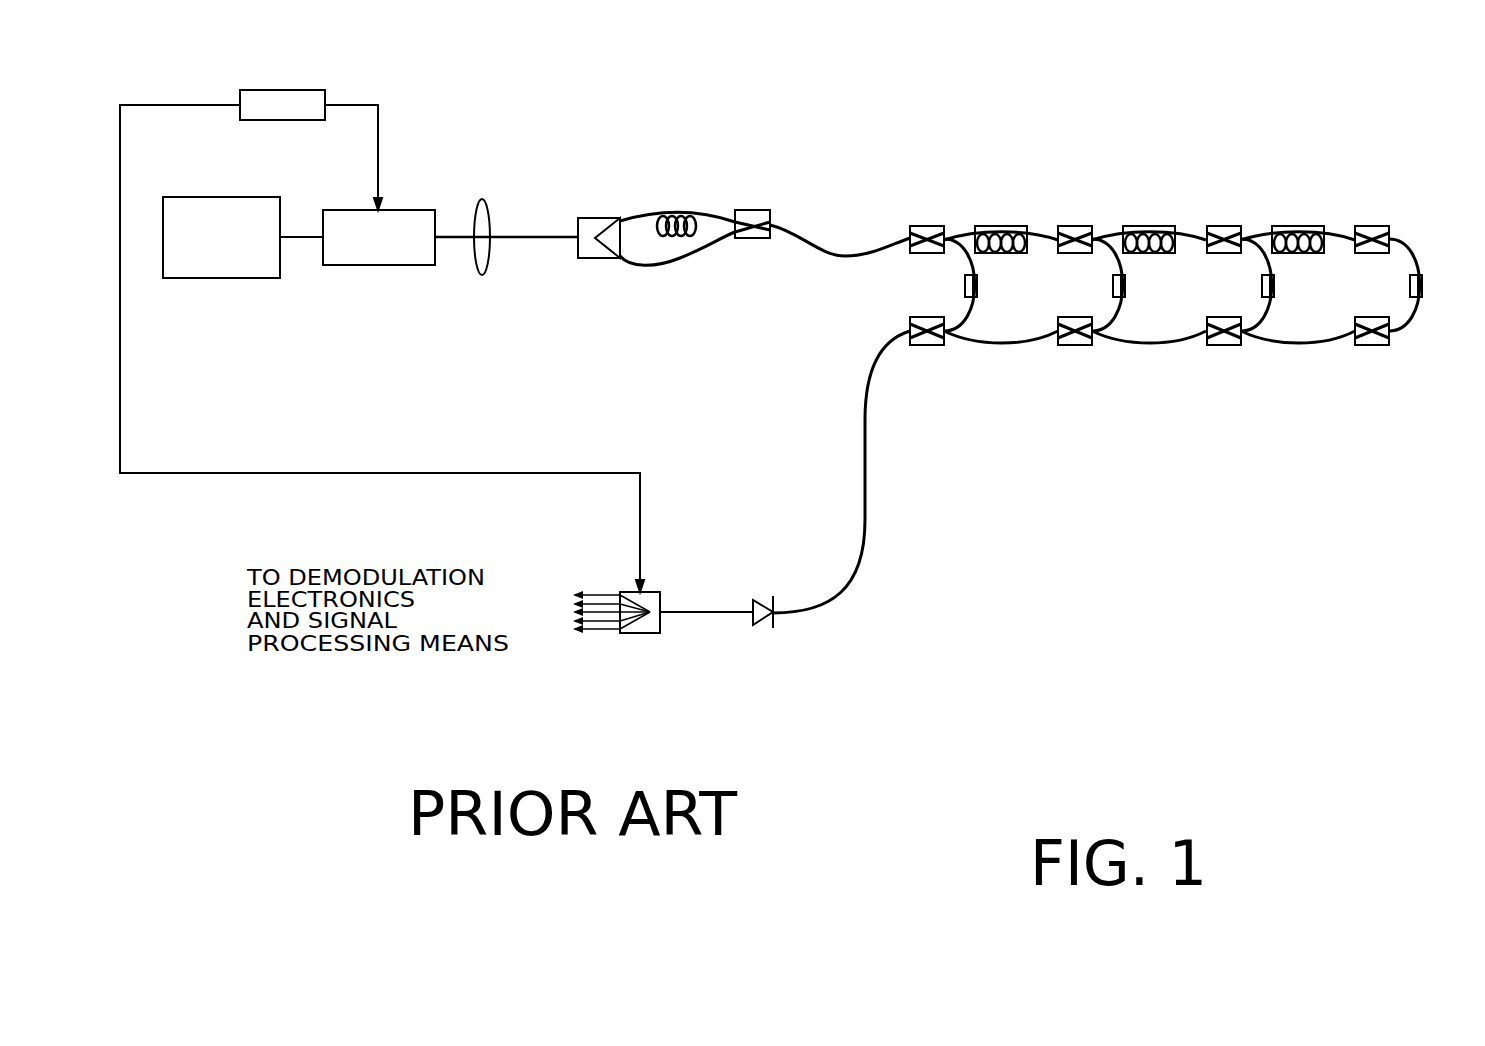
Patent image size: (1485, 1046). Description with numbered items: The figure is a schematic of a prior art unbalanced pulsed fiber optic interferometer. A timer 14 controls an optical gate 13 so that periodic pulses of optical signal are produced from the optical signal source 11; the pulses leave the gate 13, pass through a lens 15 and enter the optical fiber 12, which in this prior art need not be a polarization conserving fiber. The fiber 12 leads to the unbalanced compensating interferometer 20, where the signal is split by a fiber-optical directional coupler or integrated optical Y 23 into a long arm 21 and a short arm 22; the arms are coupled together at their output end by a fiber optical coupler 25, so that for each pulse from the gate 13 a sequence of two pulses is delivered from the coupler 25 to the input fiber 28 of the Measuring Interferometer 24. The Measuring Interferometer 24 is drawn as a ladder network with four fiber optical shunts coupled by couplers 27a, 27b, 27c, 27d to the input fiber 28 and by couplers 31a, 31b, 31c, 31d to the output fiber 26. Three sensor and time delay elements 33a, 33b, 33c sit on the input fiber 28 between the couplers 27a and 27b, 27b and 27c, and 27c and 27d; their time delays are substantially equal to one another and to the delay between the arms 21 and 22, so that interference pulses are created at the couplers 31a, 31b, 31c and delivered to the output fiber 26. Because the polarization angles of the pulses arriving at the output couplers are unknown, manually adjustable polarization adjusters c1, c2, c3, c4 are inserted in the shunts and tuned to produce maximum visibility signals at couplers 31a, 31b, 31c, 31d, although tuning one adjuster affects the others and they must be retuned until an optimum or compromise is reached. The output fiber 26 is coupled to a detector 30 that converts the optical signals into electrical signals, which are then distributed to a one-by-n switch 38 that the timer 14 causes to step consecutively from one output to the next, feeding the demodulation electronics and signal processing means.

The optical signal source 11 is at (272, 200).
The optical fiber 12 is at (510, 235).
The optical gate 13 is at (433, 213).
The timer 14 is at (322, 95).
The lens 15 is at (487, 262).
The unbalanced compensating interferometer 20 is at (720, 198).
The long arm 21 is at (672, 215).
The short arm 22 is at (690, 260).
The fiber-optical directional coupler or integrated optical Y 23 is at (605, 258).
The Measuring Interferometer 24 is at (1125, 152).
The fiber optical coupler 25 is at (762, 238).
The output fiber 26 is at (867, 505).
The coupler 27a is at (922, 230).
The coupler 27b is at (1070, 230).
The coupler 27c is at (1219, 230).
The coupler 27d is at (1367, 230).
The input fiber 28 is at (878, 249).
The detector 30 is at (775, 625).
The coupler 31a is at (937, 346).
The coupler 31b is at (1085, 346).
The coupler 31c is at (1234, 346).
The coupler 31d is at (1382, 346).
The sensor and time delay element 33a is at (999, 229).
The sensor and time delay element 33b is at (1147, 229).
The sensor and time delay element 33c is at (1296, 229).
The 1×n switch 38 is at (653, 633).
The polarization adjuster c1 is at (977, 286).
The polarization adjuster c2 is at (1125, 286).
The polarization adjuster c3 is at (1274, 286).
The polarization adjuster c4 is at (1422, 286).